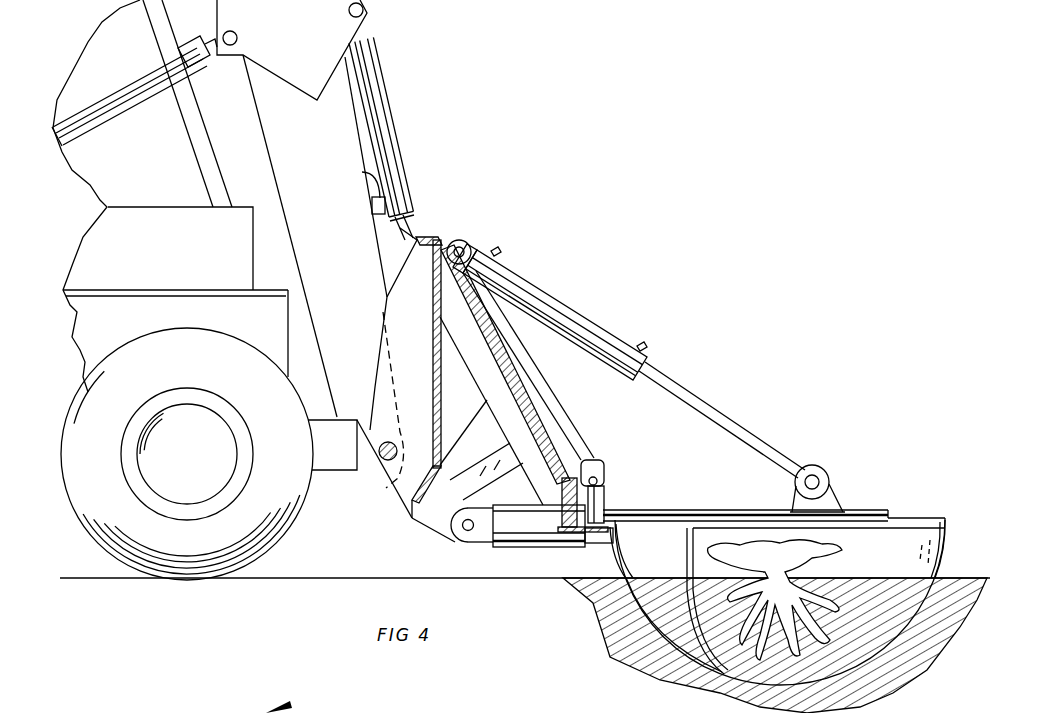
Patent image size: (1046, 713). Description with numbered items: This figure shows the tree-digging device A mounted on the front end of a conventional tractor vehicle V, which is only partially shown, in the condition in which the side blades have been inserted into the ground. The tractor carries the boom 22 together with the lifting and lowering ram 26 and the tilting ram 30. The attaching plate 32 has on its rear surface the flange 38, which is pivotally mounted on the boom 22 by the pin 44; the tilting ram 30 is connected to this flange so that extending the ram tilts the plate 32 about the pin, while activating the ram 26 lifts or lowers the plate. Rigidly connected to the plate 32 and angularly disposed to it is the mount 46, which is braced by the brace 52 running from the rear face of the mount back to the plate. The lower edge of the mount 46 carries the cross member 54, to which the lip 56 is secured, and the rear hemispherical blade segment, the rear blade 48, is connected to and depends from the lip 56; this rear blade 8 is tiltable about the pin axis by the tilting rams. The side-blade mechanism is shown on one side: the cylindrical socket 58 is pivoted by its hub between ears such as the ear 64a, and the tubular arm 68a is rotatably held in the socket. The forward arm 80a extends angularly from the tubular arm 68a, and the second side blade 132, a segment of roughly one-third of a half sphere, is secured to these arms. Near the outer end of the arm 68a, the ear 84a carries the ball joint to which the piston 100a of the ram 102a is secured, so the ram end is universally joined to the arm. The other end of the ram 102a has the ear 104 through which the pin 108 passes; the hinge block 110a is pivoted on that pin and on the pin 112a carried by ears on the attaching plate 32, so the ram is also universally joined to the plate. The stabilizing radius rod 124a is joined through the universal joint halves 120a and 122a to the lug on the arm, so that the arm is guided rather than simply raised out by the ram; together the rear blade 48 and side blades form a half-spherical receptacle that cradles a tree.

The tractor vehicle V is at (98, 25).
The lifting and lowering ram 26 is at (140, 104).
The boom 22 is at (277, 142).
The tilting ram 30 is at (397, 167).
The flange 38 is at (410, 281).
The pin 44 is at (395, 438).
The attaching plate 32 is at (442, 416).
The pin 112a is at (455, 231).
The pin 108 is at (470, 244).
The ear 104 is at (481, 250).
The ram 102a is at (612, 342).
The device A is at (695, 361).
The piston 100a is at (707, 410).
The ear 84a is at (828, 496).
The mount 46 is at (517, 391).
The stabilizing radius rod 124a is at (575, 448).
The universal joint half 122a is at (597, 472).
The universal joint half 120a is at (606, 490).
The brace 52 is at (458, 477).
The cross member 54 is at (560, 494).
The ear 64a is at (450, 546).
The hinge block 110a is at (472, 538).
The cylindrical socket 58 is at (543, 541).
The tubular arm 68a is at (700, 516).
The forward arm 80a is at (898, 518).
The lip 56 is at (650, 527).
The side blade 132 is at (897, 540).
The rear blade 48 is at (642, 558).
The rear blade 8 is at (284, 700).